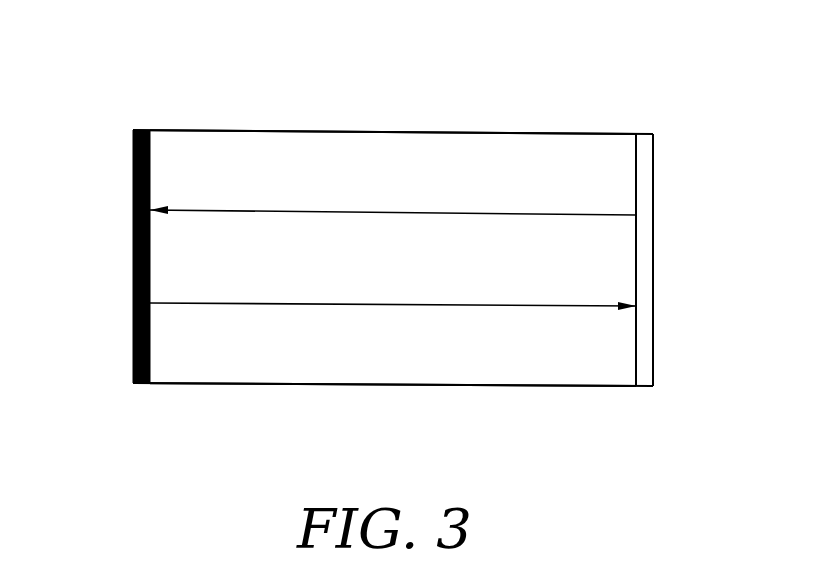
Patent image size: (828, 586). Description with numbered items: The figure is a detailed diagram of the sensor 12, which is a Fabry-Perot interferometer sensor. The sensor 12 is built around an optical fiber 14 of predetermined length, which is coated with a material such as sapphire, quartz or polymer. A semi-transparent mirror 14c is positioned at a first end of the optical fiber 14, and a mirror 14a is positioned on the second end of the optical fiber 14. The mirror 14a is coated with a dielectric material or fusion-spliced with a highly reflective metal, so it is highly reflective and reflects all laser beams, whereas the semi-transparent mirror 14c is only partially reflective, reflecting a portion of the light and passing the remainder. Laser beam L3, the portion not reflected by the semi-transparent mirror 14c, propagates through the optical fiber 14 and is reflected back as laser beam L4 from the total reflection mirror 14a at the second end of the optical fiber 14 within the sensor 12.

The sensor 12 is at (678, 92).
The optical fiber 14 is at (401, 131).
The mirror 14a is at (133, 258).
The semi-transparent mirror 14c is at (645, 263).
The laser beam L3 is at (414, 212).
The laser beam L4 is at (391, 304).